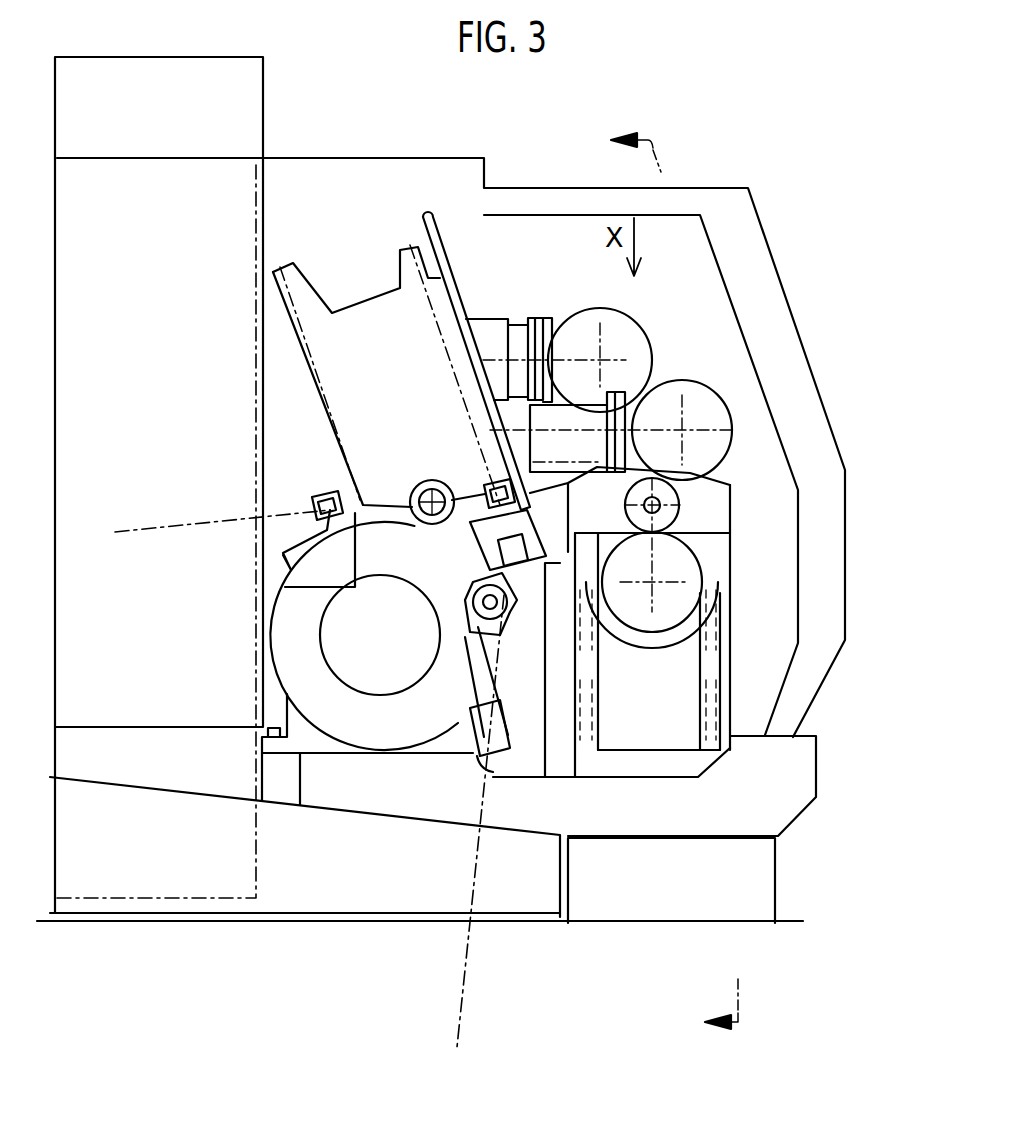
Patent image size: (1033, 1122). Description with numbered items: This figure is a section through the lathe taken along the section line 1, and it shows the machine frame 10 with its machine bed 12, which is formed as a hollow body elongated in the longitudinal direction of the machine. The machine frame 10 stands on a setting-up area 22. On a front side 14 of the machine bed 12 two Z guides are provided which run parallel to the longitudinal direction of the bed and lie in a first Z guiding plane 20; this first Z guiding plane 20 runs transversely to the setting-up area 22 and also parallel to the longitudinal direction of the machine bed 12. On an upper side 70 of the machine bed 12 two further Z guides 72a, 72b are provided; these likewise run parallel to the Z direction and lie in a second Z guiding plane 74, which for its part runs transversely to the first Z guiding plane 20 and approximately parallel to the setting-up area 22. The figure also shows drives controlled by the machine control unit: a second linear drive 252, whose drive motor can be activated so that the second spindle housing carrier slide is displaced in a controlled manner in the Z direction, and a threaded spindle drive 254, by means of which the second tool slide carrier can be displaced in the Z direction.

The section line I-I 1 is at (686, 575).
The machine frame 10 is at (230, 856).
The machine bed 12 is at (383, 723).
The front side 14 is at (497, 680).
The first Z guiding plane 20 is at (462, 1032).
The setting-up area 22 is at (598, 910).
The upper side 70 is at (392, 503).
The Z guide 72a is at (493, 487).
The Z guide 72b is at (323, 502).
The second Z guiding plane 74 is at (177, 523).
The second linear drive 252 is at (457, 637).
The threaded spindle drive 254 is at (322, 543).